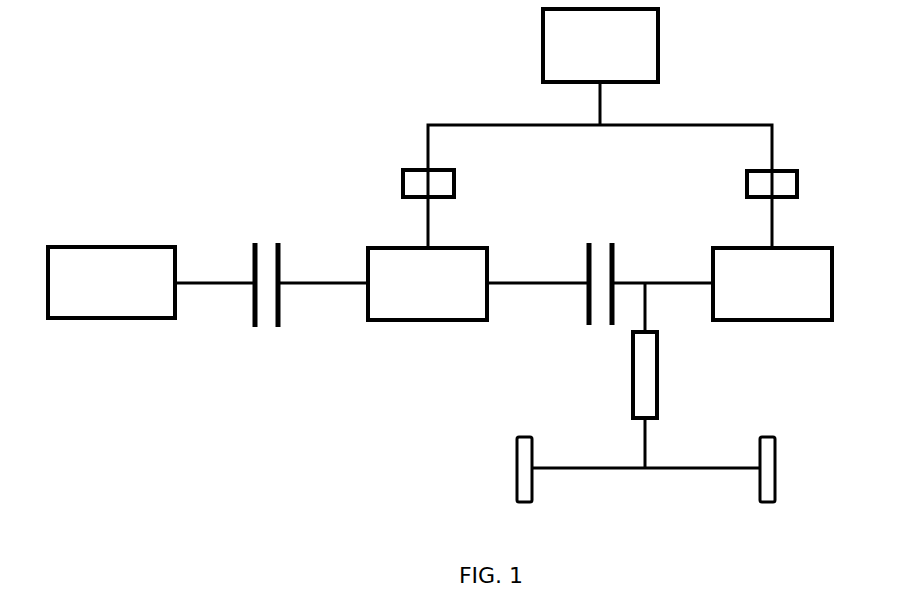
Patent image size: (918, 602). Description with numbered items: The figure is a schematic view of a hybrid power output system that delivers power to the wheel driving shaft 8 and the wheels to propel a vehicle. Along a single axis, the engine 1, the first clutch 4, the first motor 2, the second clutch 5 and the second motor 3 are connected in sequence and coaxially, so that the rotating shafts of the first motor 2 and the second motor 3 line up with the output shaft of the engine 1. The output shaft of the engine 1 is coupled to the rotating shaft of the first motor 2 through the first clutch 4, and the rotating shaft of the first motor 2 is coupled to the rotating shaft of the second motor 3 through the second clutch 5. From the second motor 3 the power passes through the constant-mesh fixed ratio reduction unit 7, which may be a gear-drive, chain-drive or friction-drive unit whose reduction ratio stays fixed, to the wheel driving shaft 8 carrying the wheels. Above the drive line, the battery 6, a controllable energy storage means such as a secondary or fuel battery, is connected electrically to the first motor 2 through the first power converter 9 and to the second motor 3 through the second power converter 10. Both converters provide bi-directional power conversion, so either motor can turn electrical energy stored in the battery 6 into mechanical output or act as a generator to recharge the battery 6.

The engine 1 is at (110, 318).
The first motor 2 is at (428, 320).
The second motor 3 is at (775, 320).
The first clutch 4 is at (252, 320).
The second clutch 5 is at (587, 250).
The battery 6 is at (658, 48).
The constant-mesh fixed ratio reduction unit 7 is at (657, 373).
The wheel driving shaft 8 is at (645, 448).
The first power converter 9 is at (403, 182).
The second power converter 10 is at (797, 184).